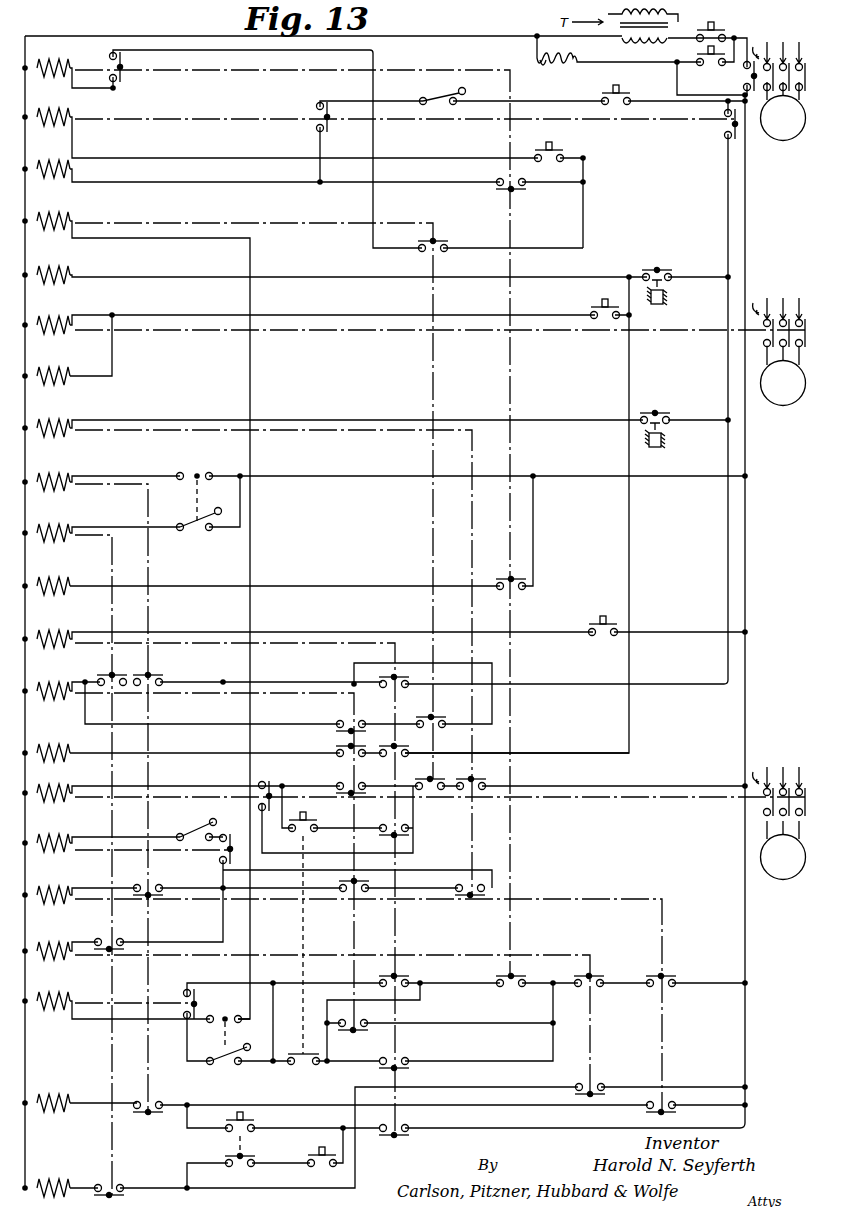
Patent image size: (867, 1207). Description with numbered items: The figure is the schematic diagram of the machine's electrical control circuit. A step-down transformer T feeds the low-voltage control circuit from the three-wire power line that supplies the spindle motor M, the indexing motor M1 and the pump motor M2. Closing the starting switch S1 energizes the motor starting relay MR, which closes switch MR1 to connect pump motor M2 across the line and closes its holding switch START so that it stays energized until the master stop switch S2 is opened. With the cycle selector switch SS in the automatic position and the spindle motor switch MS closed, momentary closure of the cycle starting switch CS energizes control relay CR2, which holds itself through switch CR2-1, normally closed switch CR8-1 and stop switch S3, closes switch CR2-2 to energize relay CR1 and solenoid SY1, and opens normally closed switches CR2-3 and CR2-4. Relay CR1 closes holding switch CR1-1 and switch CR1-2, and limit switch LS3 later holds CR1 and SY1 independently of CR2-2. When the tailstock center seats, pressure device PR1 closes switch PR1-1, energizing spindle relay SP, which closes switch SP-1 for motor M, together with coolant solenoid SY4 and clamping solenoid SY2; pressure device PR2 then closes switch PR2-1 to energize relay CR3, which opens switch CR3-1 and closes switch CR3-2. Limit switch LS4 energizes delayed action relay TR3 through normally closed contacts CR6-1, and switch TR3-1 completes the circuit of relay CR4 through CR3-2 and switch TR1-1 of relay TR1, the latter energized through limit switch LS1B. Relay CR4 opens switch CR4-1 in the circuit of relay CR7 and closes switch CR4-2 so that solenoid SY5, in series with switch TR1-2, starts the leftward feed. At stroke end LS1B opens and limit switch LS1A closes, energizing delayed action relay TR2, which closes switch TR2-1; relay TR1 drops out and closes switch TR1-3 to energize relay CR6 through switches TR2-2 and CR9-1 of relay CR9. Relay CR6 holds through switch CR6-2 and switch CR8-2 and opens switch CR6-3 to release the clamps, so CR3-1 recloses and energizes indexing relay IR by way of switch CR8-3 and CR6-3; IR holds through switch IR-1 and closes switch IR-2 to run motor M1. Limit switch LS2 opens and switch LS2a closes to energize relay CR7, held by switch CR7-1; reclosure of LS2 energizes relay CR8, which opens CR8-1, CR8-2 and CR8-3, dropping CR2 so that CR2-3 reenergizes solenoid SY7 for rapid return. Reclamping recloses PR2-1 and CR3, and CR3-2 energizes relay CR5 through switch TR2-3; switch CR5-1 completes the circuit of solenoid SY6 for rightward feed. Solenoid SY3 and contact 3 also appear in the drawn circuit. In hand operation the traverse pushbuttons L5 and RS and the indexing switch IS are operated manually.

The control relay CR2 is at (60, 65).
The control relay CR1 is at (54, 109).
The solenoid SY1 is at (78, 172).
The control relay CR8 is at (56, 212).
The solenoid valve SY3 is at (70, 270).
The spindle motor relay SP is at (59, 316).
The coolant solenoid SY4 is at (58, 366).
The control relay CR3 is at (56, 418).
The delayed action relay TR1 is at (56, 472).
The delayed action relay TR2 is at (58, 523).
The solenoid SY7 is at (59, 576).
The control relay CR9 is at (56, 629).
The control relay CR6 is at (54, 682).
The clamping solenoid SY2 is at (55, 743).
The indexing relay IR is at (50, 782).
The delayed action relay TR3 is at (53, 833).
The control relay CR4 is at (54, 886).
The control relay CR5 is at (54, 941).
The control relay CR7 is at (54, 992).
The solenoid SY5 is at (53, 1094).
The solenoid SY6 is at (54, 1178).
The holding switch CR2-1 is at (125, 82).
The holding switch CR1-1 is at (323, 134).
The limit switch LS3 is at (443, 92).
The normally closed switch CR8-1 is at (423, 258).
The switch CR2-2 is at (525, 193).
The cycle starting switch CS is at (610, 145).
The stop switch S3 is at (652, 113).
The switch CR1-2 is at (724, 133).
The motor starting relay MR is at (554, 76).
The master stop switch S2 is at (694, 31).
The starting switch S1 is at (692, 55).
The holding switch START is at (723, 76).
The switch MR1 is at (805, 55).
The pump motor M2 is at (770, 138).
The pressure responsive switch PR1-1 is at (661, 269).
The pressure responsive device PR1 is at (674, 303).
The motor switch MS is at (590, 353).
The switch SP-1 is at (802, 303).
The spindle drive motor M is at (771, 388).
The pressure switch PR2-1 is at (657, 413).
The pressure responsive device PR2 is at (668, 451).
The normally closed switch CR2-3 is at (528, 594).
The cycle selector switch SS is at (590, 655).
The limit switch LS1B is at (194, 468).
The limit switch LS1A is at (199, 529).
The switch TR2-2 is at (137, 673).
The switch TR1-3 is at (168, 678).
The switch CR9-1 is at (409, 678).
The holding switch CR6-2 is at (350, 728).
The switch CR8-2 is at (438, 733).
The switch CR6-3 is at (348, 761).
The contact 3 is at (364, 781).
The switch CR3-1 is at (487, 785).
The indexing switch IS is at (328, 820).
The switch CR8-3 is at (437, 801).
The switch CR3-2 is at (495, 896).
The holding switch IR-1 is at (271, 815).
The switch IR-2 is at (803, 776).
The indexing motor M1 is at (770, 863).
The limit switch LS4 is at (200, 826).
The switch TR3-1 is at (214, 860).
The switch TR1-1 is at (166, 898).
The switch TR2-3 is at (108, 928).
The holding switch CR7-1 is at (191, 993).
The limit switch LS2 is at (224, 1012).
The limit switch LS2a is at (258, 1053).
The normally closed contacts CR6-1 is at (345, 900).
The normally closed switch CR2-4 is at (532, 978).
The switch CR4-1 is at (676, 981).
The switch CR5-1 is at (598, 1082).
The switch CR4-2 is at (663, 1099).
The switch TR1-2 is at (159, 1096).
The traverse pushbutton switch L5 is at (221, 1126).
The traverse pushbutton switch RS is at (311, 1173).
The switch TR2-1 is at (120, 1180).